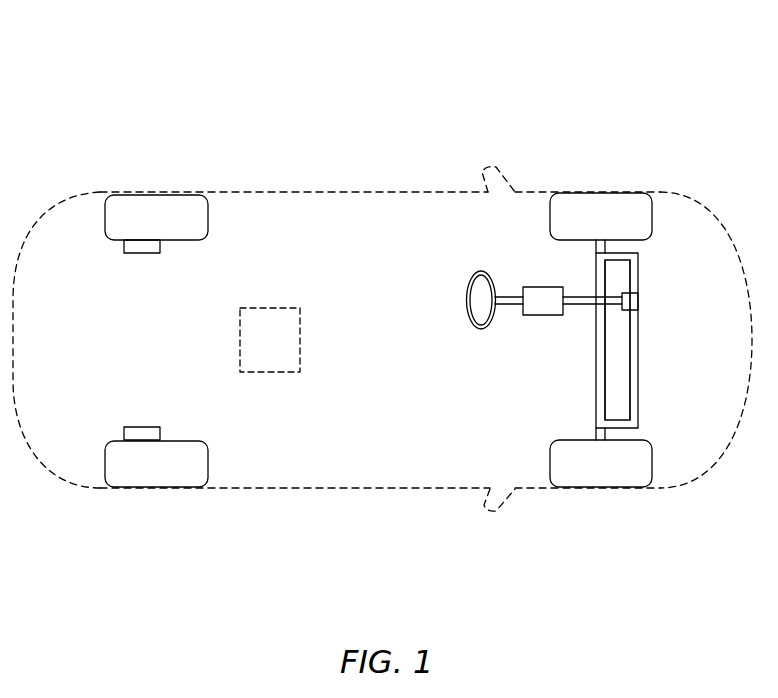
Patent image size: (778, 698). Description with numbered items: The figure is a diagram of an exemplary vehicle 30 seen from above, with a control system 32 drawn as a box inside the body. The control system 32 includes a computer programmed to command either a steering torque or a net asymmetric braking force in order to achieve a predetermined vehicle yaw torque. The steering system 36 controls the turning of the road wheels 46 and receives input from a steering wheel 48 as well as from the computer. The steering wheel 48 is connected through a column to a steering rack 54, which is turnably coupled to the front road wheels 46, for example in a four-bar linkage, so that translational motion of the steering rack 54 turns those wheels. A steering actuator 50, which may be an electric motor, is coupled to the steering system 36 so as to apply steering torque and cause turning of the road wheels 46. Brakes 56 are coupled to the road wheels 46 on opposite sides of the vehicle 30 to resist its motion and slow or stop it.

The vehicle 30 is at (70, 80).
The control system 32 is at (280, 308).
The steering system 36 is at (625, 382).
The road wheels 46 is at (177, 203).
The steering wheel 48 is at (482, 330).
The steering actuator 50 is at (548, 315).
The steering rack 54 is at (638, 352).
The brakes 56 is at (144, 253).